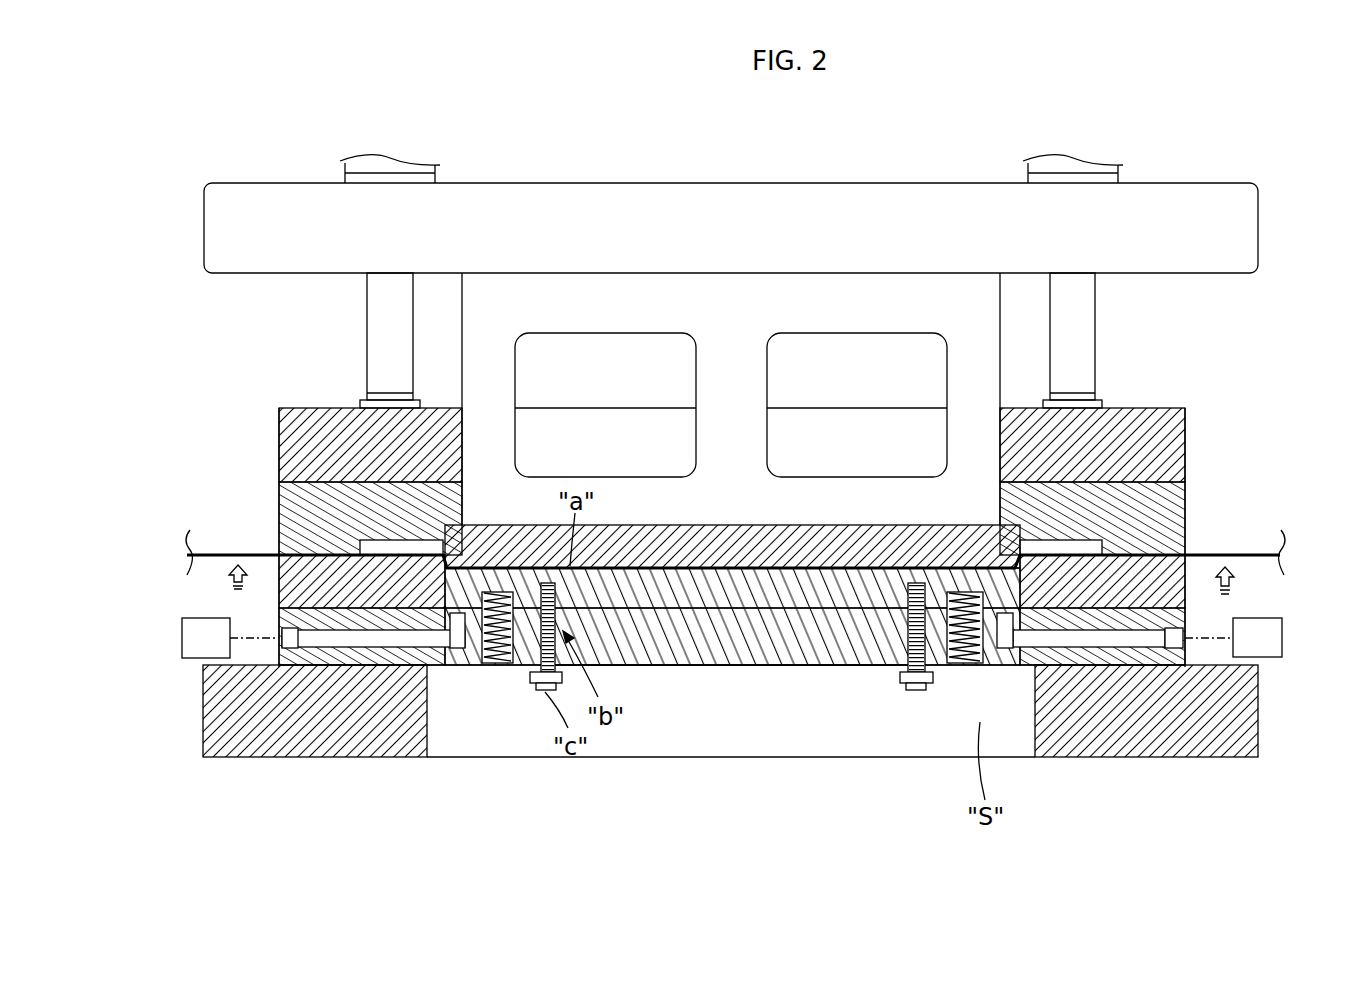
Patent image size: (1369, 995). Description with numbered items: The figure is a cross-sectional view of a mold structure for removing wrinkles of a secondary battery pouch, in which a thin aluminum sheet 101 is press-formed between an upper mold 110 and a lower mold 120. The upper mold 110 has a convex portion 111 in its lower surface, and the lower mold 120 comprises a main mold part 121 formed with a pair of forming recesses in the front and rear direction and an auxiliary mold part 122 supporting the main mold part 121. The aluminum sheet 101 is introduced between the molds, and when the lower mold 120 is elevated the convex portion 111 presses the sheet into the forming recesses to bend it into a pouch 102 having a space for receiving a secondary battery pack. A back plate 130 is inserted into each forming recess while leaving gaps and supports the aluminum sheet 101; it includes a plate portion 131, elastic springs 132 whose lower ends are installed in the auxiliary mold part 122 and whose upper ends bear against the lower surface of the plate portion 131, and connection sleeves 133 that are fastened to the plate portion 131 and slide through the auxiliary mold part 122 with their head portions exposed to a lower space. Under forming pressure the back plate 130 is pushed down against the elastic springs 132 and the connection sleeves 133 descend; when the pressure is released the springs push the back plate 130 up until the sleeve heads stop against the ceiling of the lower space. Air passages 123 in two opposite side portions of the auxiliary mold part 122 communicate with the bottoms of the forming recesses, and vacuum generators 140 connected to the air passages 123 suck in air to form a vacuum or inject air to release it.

The thin aluminum sheet 101 is at (222, 553).
The pouch 102 is at (938, 565).
The upper mold 110 is at (1212, 473).
The pressing plate 111 is at (722, 552).
The lower mold 120 is at (1278, 589).
The main mold part 121 is at (1172, 582).
The auxiliary mold part 122 is at (663, 667).
The air passages 123 is at (350, 670).
The back plate 130 is at (773, 640).
The plate portion 131 is at (806, 667).
The elastic springs 132 is at (497, 665).
The connection sleeves 133 is at (528, 706).
The vacuum generators 140 is at (182, 640).